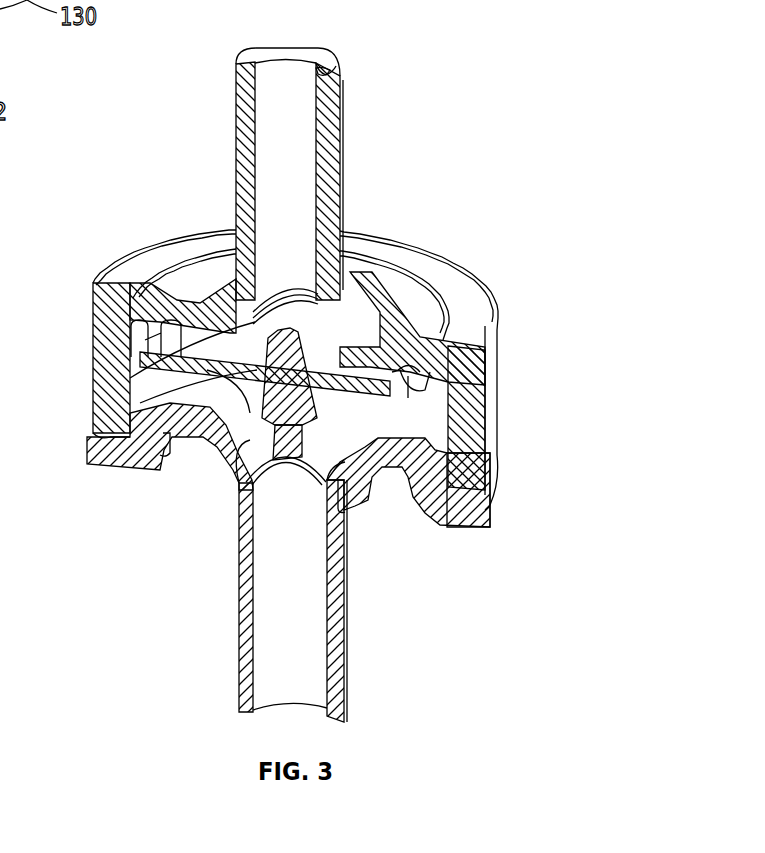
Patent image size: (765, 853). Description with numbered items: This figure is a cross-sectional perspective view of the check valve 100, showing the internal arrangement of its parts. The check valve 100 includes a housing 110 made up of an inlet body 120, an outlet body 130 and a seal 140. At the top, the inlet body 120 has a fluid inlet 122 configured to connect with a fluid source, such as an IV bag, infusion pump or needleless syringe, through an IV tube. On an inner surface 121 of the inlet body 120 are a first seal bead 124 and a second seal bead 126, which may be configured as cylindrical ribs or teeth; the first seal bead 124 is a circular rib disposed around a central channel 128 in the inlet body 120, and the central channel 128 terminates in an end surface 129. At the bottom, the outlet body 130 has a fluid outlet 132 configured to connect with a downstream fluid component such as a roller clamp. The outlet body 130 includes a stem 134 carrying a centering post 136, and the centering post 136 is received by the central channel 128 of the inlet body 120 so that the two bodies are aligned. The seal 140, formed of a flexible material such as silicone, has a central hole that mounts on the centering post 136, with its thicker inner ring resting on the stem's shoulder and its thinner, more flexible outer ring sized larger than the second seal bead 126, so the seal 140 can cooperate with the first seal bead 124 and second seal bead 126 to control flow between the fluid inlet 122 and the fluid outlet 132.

The check valve 100 is at (434, 42).
The housing 110 is at (506, 447).
The inlet body 120 is at (450, 266).
The inner surface 121 is at (136, 331).
The fluid inlet 122 is at (342, 120).
The first seal bead 124 is at (380, 373).
The second seal bead 126 is at (400, 384).
The central channel 128 is at (298, 330).
The end surface 129 is at (228, 423).
The outlet body 130 is at (480, 507).
The fluid outlet 132 is at (343, 620).
The stem 134 is at (340, 460).
The centering post 136 is at (197, 410).
The seal 140 is at (160, 367).